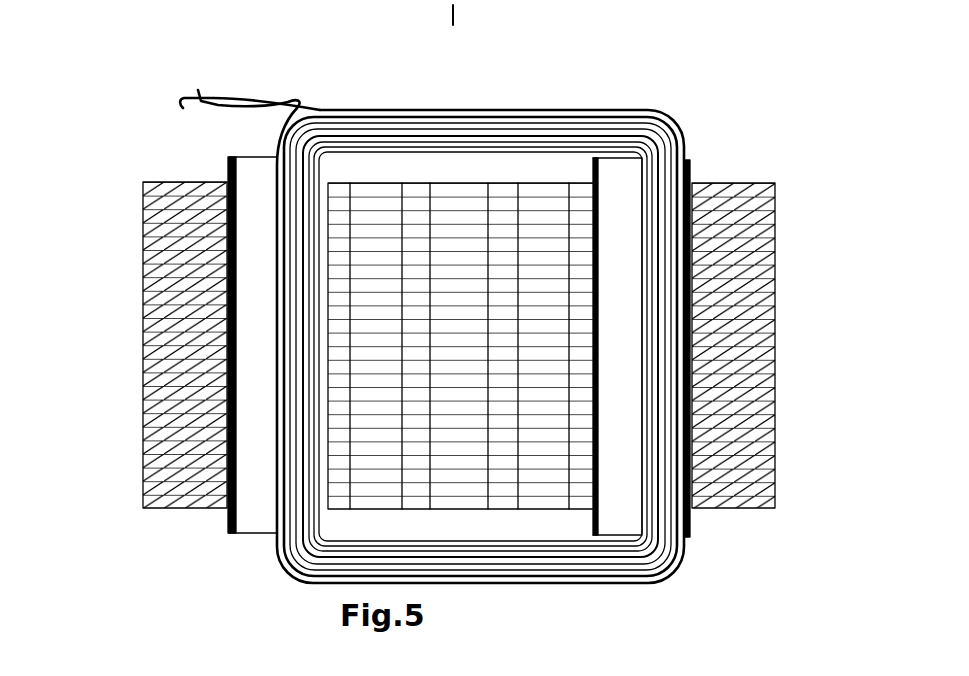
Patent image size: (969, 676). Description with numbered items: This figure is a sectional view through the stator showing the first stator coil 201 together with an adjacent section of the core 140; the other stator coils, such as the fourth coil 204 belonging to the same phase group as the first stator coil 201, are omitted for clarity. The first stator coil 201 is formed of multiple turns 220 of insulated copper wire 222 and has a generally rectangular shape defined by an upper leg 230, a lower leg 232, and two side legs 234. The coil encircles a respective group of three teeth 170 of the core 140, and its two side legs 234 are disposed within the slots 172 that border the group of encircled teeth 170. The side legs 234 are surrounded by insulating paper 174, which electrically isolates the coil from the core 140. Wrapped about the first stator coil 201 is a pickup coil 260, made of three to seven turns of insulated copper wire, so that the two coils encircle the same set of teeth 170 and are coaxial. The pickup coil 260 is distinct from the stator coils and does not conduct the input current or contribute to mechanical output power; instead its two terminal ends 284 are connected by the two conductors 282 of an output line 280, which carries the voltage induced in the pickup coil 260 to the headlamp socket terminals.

The core 140 is at (777, 283).
The teeth 170 is at (386, 502).
The slots 172 is at (500, 187).
The insulating paper 174 is at (232, 170).
The first stator coil 201 is at (473, 127).
The fourth coil 204 is at (633, 143).
The turns 220 is at (688, 172).
The insulated copper wire 222 is at (652, 213).
The upper leg 230 is at (483, 137).
The lower leg 232 is at (520, 552).
The side legs 234 is at (300, 328).
The pickup coil 260 is at (590, 110).
The output line 280 is at (277, 73).
The conductors 282 is at (214, 47).
The terminal ends 284 is at (312, 108).